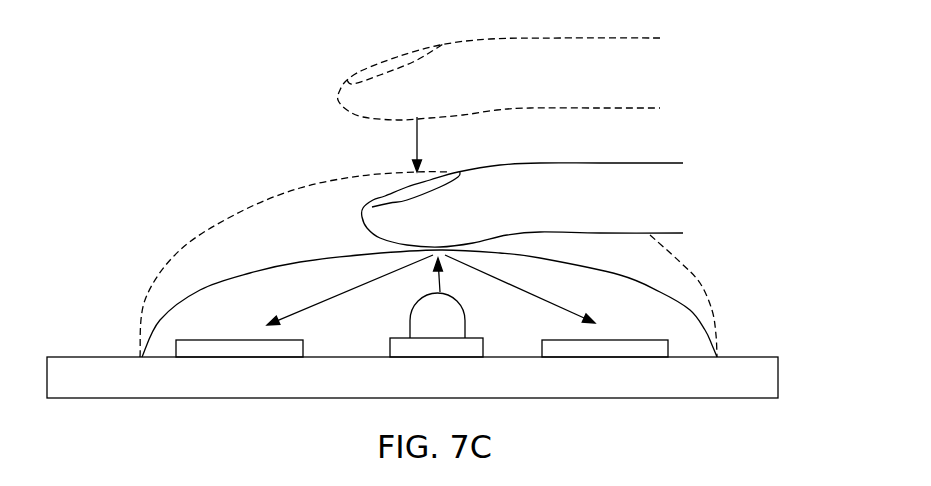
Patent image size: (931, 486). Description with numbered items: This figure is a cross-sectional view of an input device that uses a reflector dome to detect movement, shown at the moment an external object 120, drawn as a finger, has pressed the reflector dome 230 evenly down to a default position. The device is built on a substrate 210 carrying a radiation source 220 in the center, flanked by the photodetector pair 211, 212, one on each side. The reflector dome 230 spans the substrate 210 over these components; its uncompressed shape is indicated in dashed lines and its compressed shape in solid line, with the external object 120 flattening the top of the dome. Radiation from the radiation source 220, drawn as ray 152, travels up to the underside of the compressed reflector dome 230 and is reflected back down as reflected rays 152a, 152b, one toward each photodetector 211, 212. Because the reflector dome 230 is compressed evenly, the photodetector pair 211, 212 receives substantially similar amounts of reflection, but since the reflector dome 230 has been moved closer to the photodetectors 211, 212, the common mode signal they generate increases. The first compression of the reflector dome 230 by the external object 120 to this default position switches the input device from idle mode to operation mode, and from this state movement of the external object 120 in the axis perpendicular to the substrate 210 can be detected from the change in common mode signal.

The external object 120 is at (657, 220).
The reflector dome 230 is at (690, 310).
The substrate 210 is at (150, 396).
The photodetector 211 is at (242, 343).
The photodetector 212 is at (650, 352).
The radiation source 220 is at (437, 331).
The ray 152 is at (440, 282).
The reflected ray 152a is at (529, 299).
The reflected ray 152b is at (315, 303).